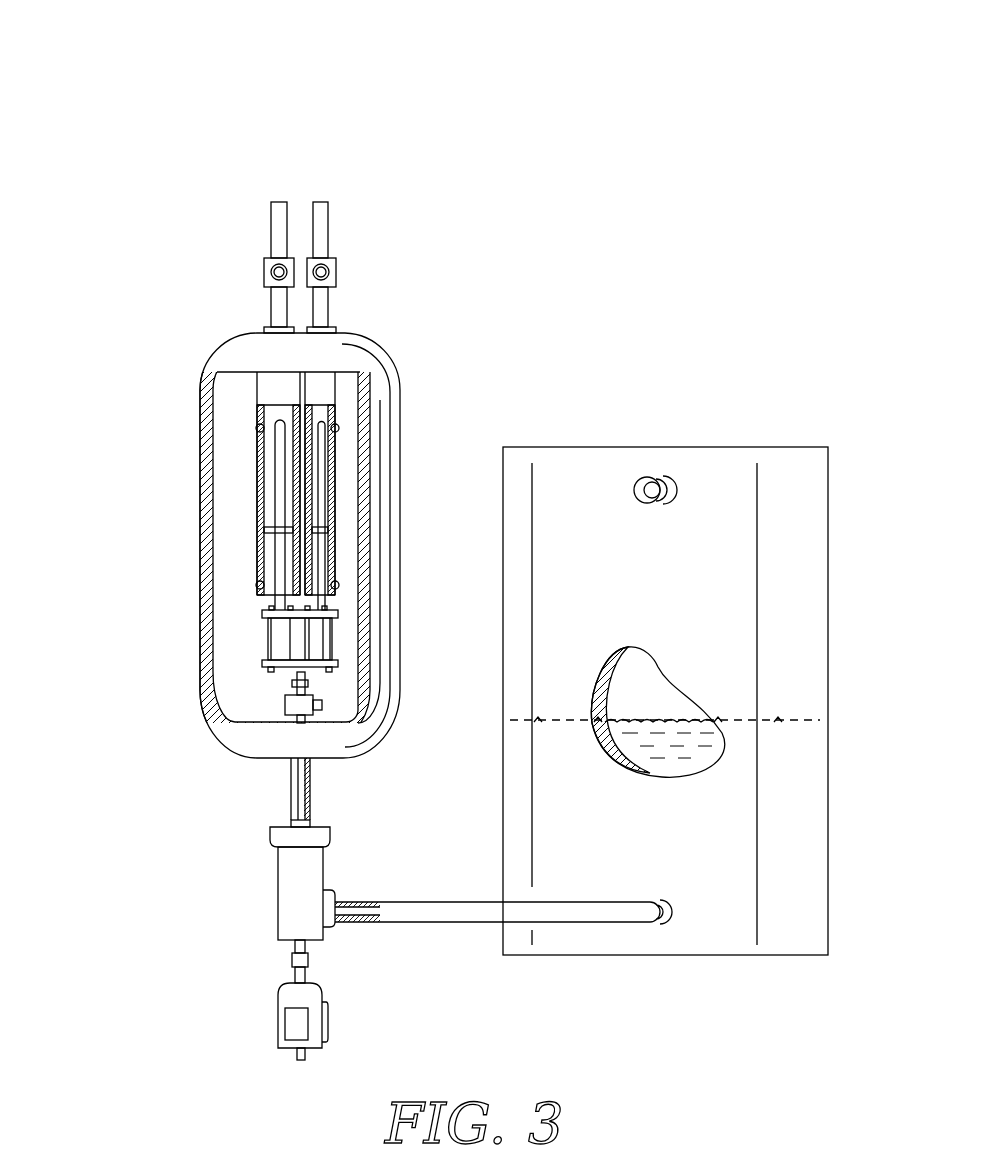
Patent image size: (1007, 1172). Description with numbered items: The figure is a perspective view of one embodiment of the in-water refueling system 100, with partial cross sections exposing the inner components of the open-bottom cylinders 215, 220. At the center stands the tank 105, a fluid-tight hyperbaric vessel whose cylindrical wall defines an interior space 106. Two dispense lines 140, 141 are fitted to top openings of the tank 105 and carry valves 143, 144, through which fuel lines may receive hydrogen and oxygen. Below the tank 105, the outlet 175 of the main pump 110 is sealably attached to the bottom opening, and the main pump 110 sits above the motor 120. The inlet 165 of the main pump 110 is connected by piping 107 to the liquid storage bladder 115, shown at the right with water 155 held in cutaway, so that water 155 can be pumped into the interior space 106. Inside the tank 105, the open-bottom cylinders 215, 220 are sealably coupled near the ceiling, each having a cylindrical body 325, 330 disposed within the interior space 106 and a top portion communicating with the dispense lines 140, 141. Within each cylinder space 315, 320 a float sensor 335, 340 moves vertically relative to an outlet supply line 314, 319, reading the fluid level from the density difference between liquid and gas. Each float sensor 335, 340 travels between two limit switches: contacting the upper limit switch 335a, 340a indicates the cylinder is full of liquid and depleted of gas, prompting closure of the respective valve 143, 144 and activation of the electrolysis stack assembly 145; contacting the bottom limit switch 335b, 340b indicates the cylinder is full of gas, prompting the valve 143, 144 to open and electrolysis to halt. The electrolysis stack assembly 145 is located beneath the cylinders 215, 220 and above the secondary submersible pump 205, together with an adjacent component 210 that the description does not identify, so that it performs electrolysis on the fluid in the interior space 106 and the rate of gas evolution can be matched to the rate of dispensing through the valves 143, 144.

The in-water refueling system 100 is at (592, 224).
The tank 105 is at (283, 532).
The interior space 106 is at (232, 672).
The piping 107 is at (445, 922).
The main pump 110 is at (290, 906).
The liquid storage bladder 115 is at (738, 442).
The motor 120 is at (290, 1000).
The dispense line 140 is at (277, 215).
The dispense line 141 is at (323, 215).
The valve 143 is at (265, 275).
The valve 144 is at (335, 275).
The electrolysis stack assembly 145 is at (270, 663).
The water 155 is at (628, 717).
The inlet 165 is at (675, 478).
The outlet 175 is at (310, 793).
The secondary submersible pump 205 is at (315, 695).
The pump 210 is at (332, 634).
The open-bottom cylinder 215 is at (183, 491).
The open-bottom cylinder 220 is at (415, 491).
The outlet supply line 314 is at (272, 496).
The cylinder space 315 is at (276, 470).
The outlet supply line 319 is at (330, 496).
The cylinder space 320 is at (323, 470).
The cylindrical body 325 is at (272, 556).
The cylindrical body 330 is at (324, 556).
The float sensor 335 is at (266, 528).
The upper limit switch 335a is at (256, 428).
The bottom limit switch 335b is at (256, 586).
The float sensor 340 is at (338, 528).
The upper limit switch 340a is at (340, 428).
The bottom limit switch 340b is at (340, 586).